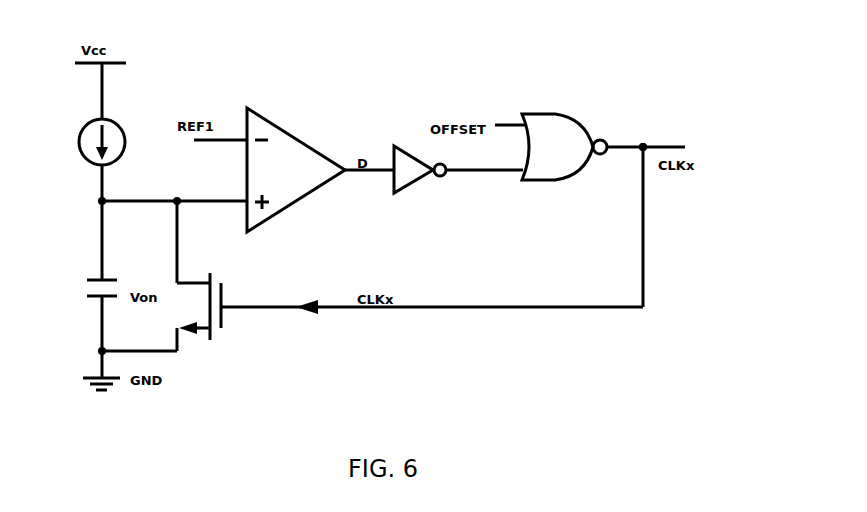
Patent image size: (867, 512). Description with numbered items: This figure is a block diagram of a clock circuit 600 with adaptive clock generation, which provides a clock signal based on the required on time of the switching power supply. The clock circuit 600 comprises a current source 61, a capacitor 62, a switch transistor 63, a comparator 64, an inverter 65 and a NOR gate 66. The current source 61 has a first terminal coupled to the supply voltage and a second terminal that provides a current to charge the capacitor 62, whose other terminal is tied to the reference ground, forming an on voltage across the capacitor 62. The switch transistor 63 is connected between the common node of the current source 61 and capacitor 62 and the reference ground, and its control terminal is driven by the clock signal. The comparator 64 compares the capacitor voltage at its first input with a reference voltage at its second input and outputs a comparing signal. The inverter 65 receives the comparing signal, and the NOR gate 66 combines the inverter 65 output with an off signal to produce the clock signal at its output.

The current source 61 is at (74, 140).
The capacitor 62 is at (95, 295).
The switch transistor 63 is at (210, 341).
The comparator 64 is at (300, 200).
The inverter 65 is at (405, 187).
The NOR gate 66 is at (560, 183).
The clock circuit 600 is at (660, 110).